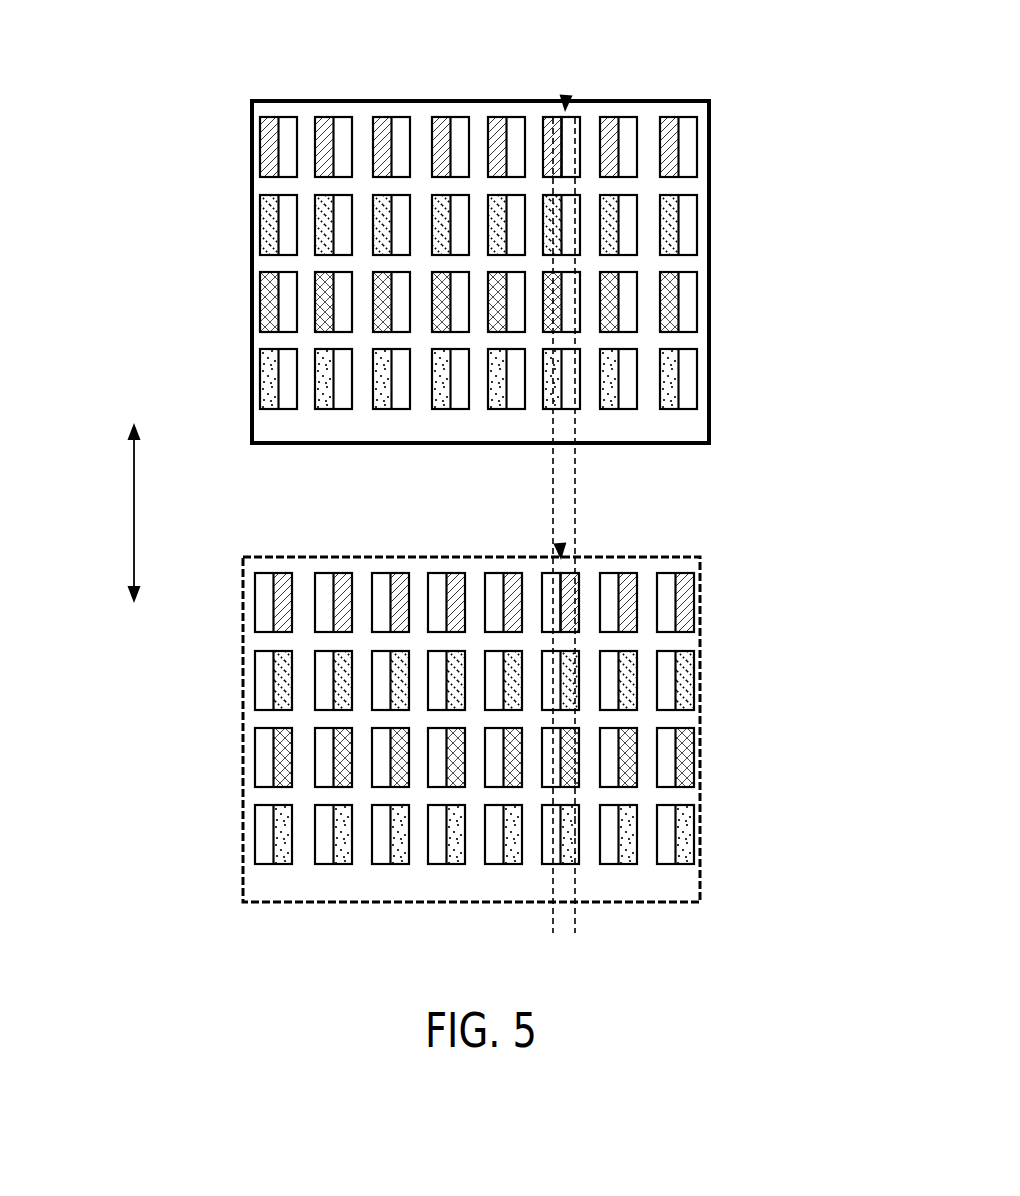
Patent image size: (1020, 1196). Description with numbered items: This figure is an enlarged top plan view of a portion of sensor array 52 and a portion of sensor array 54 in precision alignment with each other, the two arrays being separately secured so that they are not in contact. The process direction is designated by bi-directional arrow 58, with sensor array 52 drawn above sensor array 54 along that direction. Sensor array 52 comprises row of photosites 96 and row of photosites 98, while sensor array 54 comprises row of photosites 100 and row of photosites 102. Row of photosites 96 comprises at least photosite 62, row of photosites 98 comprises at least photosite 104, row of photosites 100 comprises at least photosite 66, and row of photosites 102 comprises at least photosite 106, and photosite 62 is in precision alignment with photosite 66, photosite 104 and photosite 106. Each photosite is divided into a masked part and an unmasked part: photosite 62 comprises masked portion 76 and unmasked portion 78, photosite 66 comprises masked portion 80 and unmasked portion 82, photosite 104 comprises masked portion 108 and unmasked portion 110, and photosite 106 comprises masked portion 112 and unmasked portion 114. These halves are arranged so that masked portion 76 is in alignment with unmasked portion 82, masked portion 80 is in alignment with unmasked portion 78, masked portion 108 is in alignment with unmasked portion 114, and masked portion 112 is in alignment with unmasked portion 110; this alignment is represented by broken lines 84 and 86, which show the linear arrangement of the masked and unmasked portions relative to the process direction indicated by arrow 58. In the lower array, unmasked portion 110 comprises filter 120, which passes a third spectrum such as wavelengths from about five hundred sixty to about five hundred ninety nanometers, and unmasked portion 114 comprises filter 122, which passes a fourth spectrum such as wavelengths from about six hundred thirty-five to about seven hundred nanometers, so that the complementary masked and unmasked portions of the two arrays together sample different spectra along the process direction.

The sensor array 52 is at (735, 298).
The sensor array 54 is at (727, 753).
The bi-directional arrow 58 is at (134, 507).
The photosite 62 is at (566, 98).
The photosite 66 is at (561, 546).
The masked portion 76 is at (568, 122).
The unmasked portion 78 is at (557, 122).
The masked portion 80 is at (547, 583).
The unmasked portion 82 is at (570, 583).
The broken line 84 is at (575, 917).
The broken line 86 is at (553, 917).
The row of photosites 96 is at (238, 147).
The row of photosites 98 is at (238, 225).
The row of photosites 100 is at (231, 605).
The row of photosites 102 is at (231, 682).
The photosite 104 is at (594, 215).
The photosite 106 is at (572, 688).
The masked portion 108 is at (570, 245).
The unmasked portion 110 is at (558, 207).
The masked portion 112 is at (548, 678).
The unmasked portion 114 is at (594, 657).
The filter 120 is at (557, 243).
The filter 122 is at (572, 690).